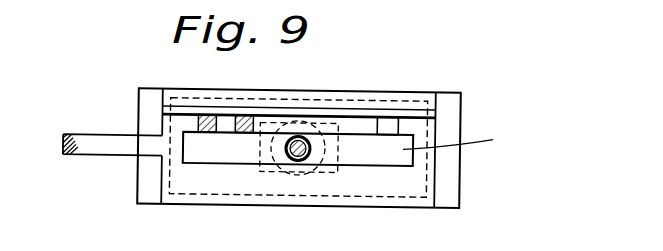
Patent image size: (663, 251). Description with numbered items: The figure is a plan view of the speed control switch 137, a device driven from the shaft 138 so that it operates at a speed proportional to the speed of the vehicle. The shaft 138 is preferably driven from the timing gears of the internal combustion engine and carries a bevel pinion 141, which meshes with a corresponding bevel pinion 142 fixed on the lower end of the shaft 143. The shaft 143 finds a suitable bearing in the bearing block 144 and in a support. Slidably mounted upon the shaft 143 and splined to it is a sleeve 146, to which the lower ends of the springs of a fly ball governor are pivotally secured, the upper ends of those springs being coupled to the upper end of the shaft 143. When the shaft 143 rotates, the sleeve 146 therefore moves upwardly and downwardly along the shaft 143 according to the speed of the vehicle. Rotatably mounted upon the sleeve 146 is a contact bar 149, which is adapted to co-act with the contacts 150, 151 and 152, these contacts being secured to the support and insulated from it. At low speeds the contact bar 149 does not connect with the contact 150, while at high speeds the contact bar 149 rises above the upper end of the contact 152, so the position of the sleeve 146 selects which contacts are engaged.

The speed control switch 137 is at (470, 144).
The shaft 138 is at (87, 134).
The bevel pinion 141 is at (265, 172).
The bevel pinion 142 is at (303, 177).
The shaft 143 is at (313, 152).
The bearing block 144 is at (323, 124).
The sleeve 146 is at (293, 162).
The contact bar 149 is at (400, 166).
The contact 150 is at (197, 114).
The contact 151 is at (237, 114).
The contact 152 is at (393, 132).